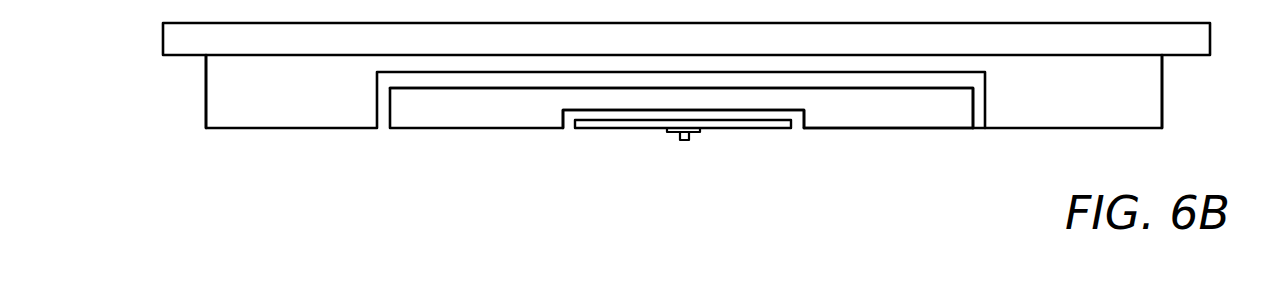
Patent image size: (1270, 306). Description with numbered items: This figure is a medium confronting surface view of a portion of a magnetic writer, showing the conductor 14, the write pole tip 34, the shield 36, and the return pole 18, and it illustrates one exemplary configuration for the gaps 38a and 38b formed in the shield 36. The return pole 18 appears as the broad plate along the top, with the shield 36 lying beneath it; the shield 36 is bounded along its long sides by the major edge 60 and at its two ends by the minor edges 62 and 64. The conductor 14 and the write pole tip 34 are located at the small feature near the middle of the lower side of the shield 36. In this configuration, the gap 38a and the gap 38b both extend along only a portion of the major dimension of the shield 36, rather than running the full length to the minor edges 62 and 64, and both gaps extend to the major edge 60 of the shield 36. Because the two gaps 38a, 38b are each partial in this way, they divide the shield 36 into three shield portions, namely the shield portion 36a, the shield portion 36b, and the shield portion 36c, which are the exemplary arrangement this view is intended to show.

The conductor 14 is at (700, 132).
The return pole 18 is at (183, 53).
The write pole tip 34 is at (680, 140).
The shield 36 is at (410, 140).
The shield portion 36a is at (1020, 118).
The shield portion 36b is at (880, 118).
The shield portion 36c is at (613, 125).
The gap 38a is at (933, 83).
The gap 38b is at (778, 115).
The major edge 60 is at (243, 128).
The minor edge 62 is at (206, 97).
The minor edge 64 is at (1162, 92).